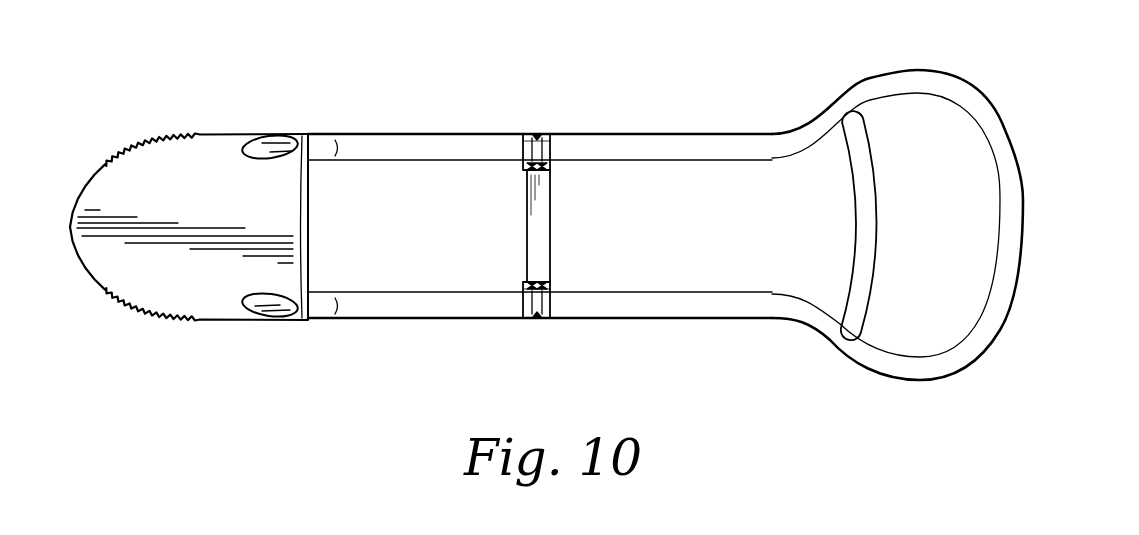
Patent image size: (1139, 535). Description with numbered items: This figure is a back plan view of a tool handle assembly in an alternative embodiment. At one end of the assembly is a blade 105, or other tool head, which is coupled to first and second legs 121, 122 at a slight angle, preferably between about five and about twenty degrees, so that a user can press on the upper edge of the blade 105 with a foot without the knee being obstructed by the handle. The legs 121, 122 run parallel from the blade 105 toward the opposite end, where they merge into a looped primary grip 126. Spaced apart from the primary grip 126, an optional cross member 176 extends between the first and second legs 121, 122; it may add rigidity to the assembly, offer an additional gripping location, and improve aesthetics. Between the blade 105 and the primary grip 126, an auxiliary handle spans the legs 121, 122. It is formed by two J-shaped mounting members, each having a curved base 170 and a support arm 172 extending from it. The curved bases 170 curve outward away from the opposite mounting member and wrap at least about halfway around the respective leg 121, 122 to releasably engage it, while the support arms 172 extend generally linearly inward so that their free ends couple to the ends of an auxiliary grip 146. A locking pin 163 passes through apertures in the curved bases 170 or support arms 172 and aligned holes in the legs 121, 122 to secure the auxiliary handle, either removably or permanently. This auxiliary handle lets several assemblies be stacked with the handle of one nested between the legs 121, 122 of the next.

The blade 105 is at (181, 160).
The second leg 122 is at (437, 133).
The first leg 121 is at (370, 318).
The primary grip 126 is at (1023, 230).
The cross member 176 is at (883, 232).
The locking pin 163 is at (537, 133).
The curved base 170 is at (548, 140).
The support arm 172 is at (552, 168).
The auxiliary grip 146 is at (553, 232).